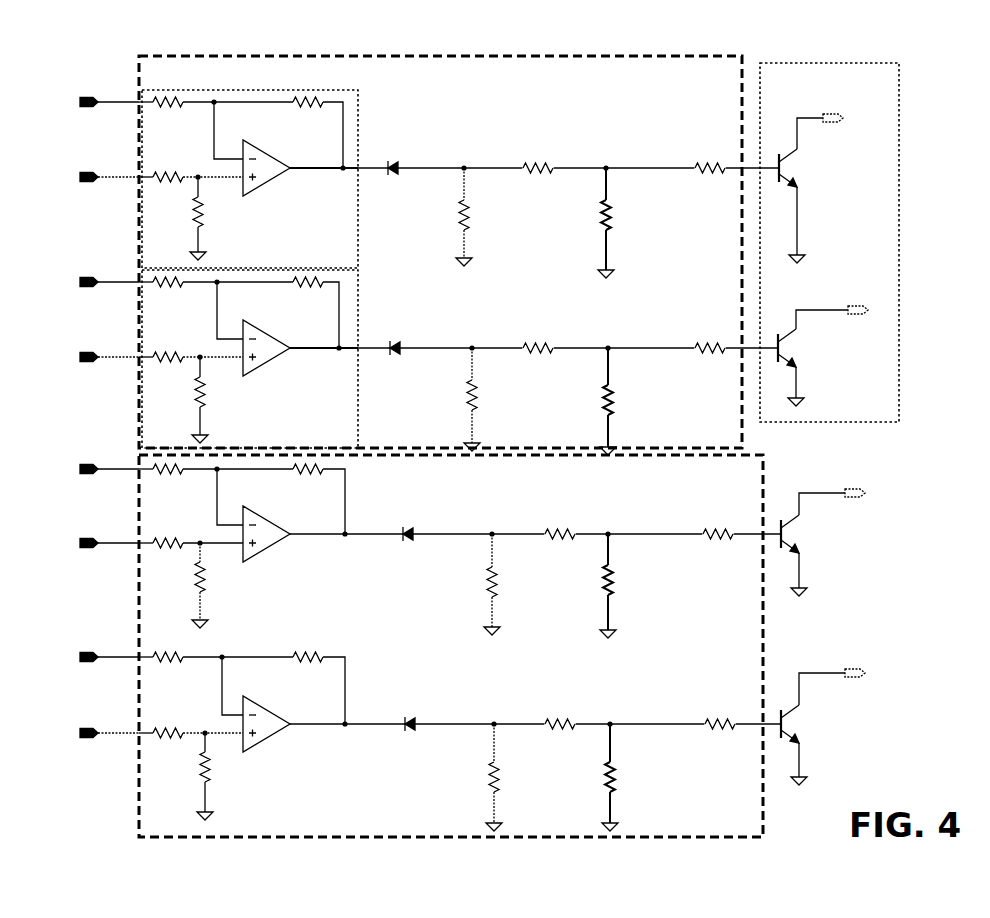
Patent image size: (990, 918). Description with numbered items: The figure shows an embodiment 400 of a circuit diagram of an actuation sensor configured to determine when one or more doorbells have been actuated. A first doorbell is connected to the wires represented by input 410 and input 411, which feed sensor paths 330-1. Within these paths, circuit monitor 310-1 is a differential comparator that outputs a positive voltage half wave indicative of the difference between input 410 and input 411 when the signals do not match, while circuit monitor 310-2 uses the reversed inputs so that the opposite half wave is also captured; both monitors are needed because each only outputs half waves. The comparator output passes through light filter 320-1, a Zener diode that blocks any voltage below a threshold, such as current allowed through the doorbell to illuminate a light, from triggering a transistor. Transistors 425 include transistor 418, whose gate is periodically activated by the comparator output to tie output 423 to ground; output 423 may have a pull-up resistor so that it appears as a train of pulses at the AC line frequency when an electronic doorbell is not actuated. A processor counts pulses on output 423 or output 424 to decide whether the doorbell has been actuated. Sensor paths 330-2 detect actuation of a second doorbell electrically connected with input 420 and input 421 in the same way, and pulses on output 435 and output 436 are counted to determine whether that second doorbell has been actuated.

The embodiment of a circuit diagram of an actuation sensor 400 is at (922, 99).
The input 410 is at (87, 98).
The input 411 is at (87, 173).
The input 420 is at (87, 465).
The input 421 is at (87, 539).
The circuit monitor 310-1 is at (283, 90).
The circuit monitor 310-2 is at (362, 270).
The light filter 320-1 is at (397, 162).
The sensor paths 330-1 is at (739, 55).
The sensor paths 330-2 is at (372, 837).
The transistor 418 is at (776, 157).
The output 423 is at (832, 114).
The output 424 is at (852, 306).
The transistors 425 is at (829, 61).
The output 435 is at (848, 489).
The output 436 is at (848, 669).